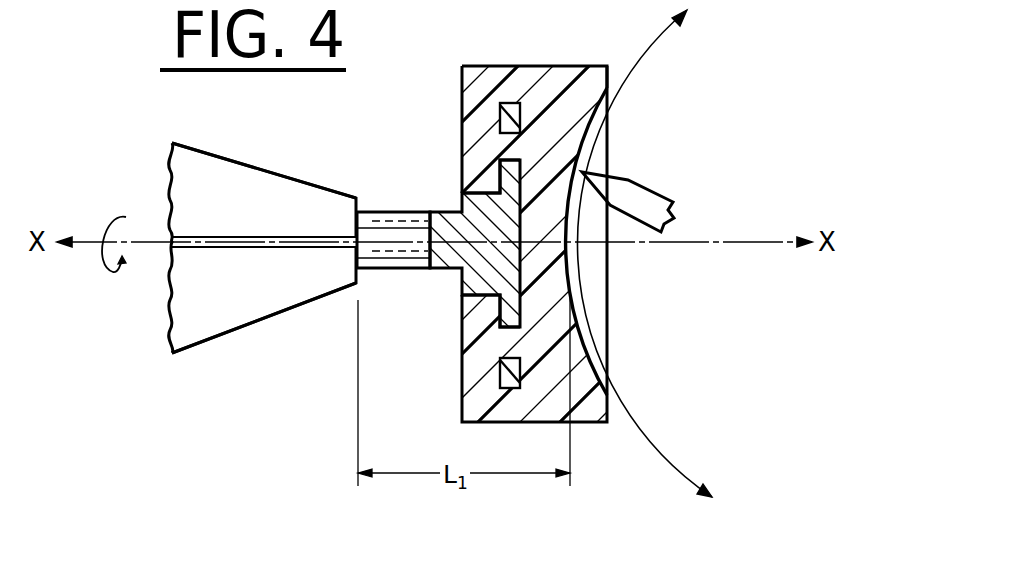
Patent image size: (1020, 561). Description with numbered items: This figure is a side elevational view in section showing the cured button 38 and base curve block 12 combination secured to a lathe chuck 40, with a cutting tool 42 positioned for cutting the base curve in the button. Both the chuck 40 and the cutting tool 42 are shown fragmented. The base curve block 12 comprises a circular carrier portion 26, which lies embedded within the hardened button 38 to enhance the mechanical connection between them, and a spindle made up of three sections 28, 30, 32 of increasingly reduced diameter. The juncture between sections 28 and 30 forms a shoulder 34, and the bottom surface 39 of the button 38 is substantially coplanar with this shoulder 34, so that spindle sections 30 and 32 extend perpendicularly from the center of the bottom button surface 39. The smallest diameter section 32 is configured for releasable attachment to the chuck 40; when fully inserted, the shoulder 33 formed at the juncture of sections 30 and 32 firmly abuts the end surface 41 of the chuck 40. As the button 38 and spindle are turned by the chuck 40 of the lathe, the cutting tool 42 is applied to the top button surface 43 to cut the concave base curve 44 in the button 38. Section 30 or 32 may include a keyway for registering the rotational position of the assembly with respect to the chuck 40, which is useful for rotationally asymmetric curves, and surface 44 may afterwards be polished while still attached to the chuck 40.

The base curve block 12 is at (384, 212).
The circular carrier portion 26 is at (523, 104).
The spindle section 28 is at (470, 193).
The spindle section 30 is at (415, 268).
The spindle section 32 is at (244, 250).
The shoulder 33 is at (348, 260).
The shoulder 34 is at (461, 212).
The button 38 is at (496, 66).
The bottom surface of button 39 is at (462, 94).
The chuck 40 is at (215, 324).
The end surface of chuck 41 is at (351, 184).
The cutting tool 42 is at (642, 197).
The top button surface 43 is at (608, 76).
The concave base curve 44 is at (577, 294).